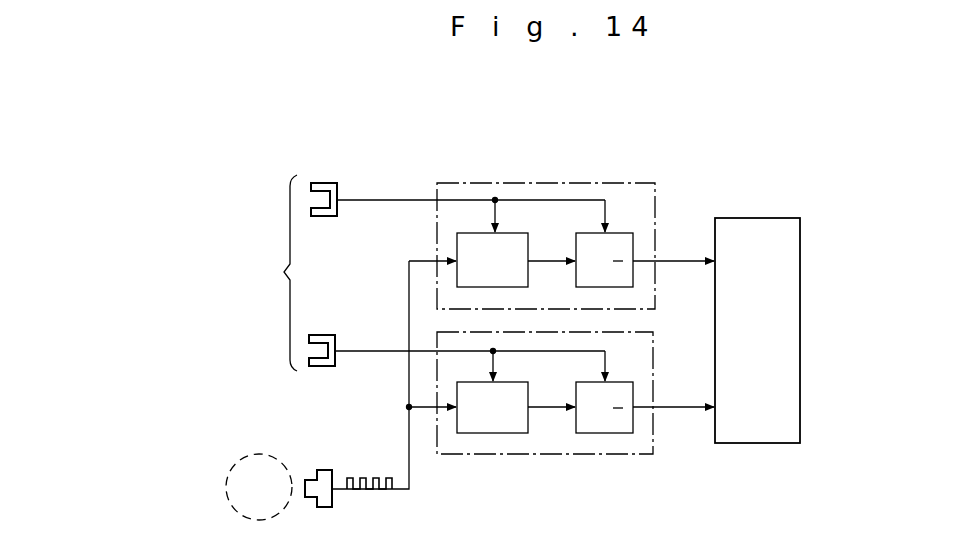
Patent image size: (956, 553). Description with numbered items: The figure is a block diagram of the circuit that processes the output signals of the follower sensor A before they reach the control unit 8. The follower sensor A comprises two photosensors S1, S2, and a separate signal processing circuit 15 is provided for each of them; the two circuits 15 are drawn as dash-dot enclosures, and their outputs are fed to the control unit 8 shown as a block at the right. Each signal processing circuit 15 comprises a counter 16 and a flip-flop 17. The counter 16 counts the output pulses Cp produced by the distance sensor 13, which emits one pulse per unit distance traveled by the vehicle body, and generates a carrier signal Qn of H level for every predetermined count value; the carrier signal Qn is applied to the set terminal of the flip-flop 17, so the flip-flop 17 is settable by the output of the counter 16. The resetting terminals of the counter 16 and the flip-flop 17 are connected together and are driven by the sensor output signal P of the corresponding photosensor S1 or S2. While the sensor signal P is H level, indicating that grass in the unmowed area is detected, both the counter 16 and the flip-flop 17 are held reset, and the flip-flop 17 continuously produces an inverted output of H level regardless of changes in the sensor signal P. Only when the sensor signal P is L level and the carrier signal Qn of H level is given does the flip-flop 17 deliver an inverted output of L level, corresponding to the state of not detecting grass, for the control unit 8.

The control unit 8 is at (765, 218).
The distance sensor 13 is at (314, 461).
The signal processing circuit 15 is at (546, 183).
The counter 16 is at (457, 243).
The flip-flop 17 is at (633, 243).
The follower sensor A is at (278, 273).
The photosensor S1 is at (328, 182).
The photosensor S2 is at (320, 335).
The sensor output signal P is at (384, 200).
The output pulse Cp is at (409, 431).
The carrier signal Qn is at (548, 260).